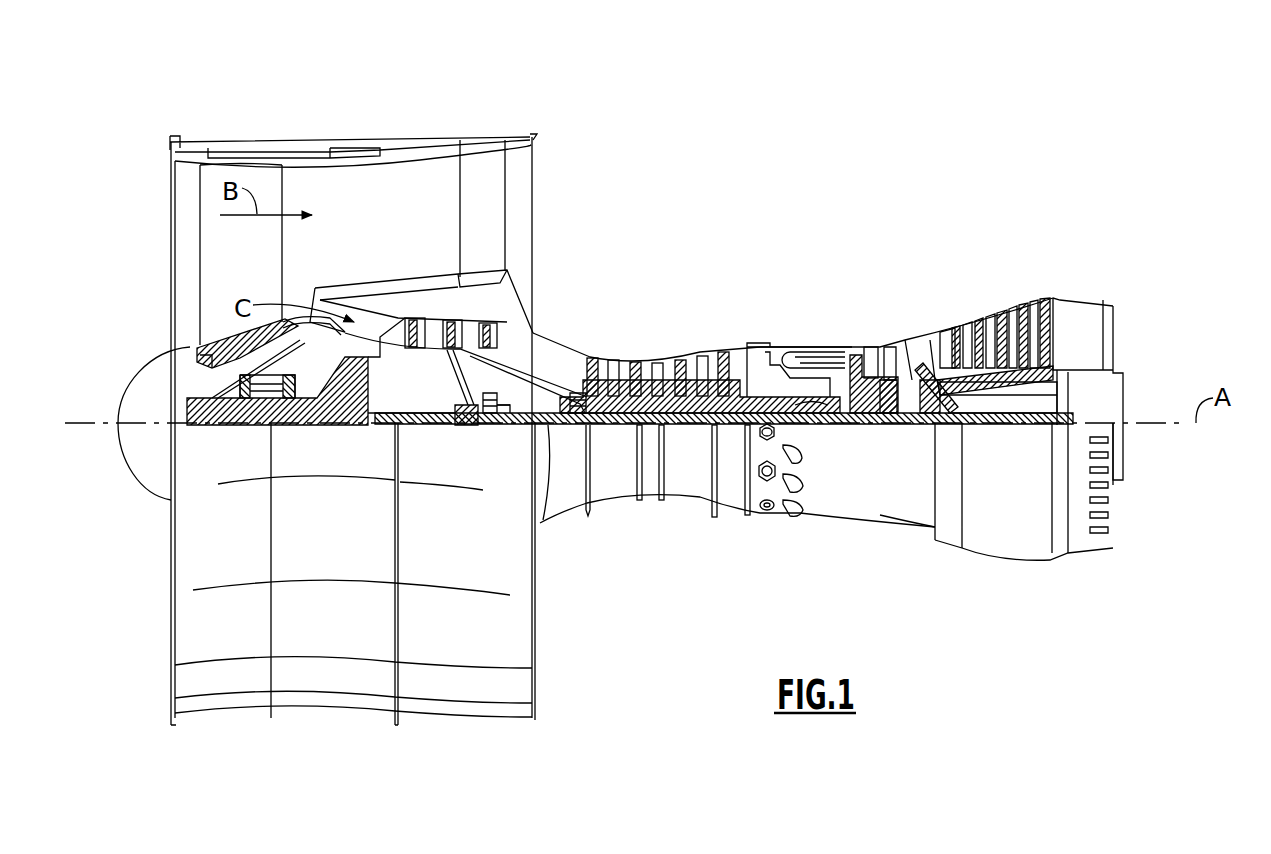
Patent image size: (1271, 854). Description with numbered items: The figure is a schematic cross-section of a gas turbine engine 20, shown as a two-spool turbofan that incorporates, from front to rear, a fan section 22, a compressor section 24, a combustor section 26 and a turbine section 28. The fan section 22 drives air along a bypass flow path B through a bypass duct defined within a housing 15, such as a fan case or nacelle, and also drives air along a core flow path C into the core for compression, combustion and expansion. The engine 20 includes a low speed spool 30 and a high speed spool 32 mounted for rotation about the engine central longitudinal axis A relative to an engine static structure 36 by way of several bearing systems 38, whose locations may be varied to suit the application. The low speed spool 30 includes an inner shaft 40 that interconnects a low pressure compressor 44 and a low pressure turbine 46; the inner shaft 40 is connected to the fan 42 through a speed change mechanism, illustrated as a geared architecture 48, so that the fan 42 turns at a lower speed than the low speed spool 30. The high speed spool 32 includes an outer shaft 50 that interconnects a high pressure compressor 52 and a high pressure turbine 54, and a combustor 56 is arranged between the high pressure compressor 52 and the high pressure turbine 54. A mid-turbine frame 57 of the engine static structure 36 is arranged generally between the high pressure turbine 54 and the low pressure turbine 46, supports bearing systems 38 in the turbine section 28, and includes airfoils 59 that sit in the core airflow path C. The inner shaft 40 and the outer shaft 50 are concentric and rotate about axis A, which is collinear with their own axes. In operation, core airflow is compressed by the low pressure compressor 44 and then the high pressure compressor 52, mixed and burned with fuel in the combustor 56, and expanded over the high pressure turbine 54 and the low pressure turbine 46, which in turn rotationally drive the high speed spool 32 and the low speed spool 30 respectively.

The gas turbine engine 20 is at (815, 189).
The housing 15 is at (352, 148).
The fan section 22 is at (281, 128).
The fan 42 is at (256, 269).
The geared architecture 48 is at (358, 408).
The low pressure compressor 44 is at (457, 330).
The compressor section 24 is at (583, 330).
The high pressure compressor 52 is at (672, 352).
The high speed spool 32 is at (733, 382).
The combustor section 26 is at (806, 312).
The combustor 56 is at (805, 366).
The high pressure turbine 54 is at (871, 355).
The mid-turbine frame 57 is at (918, 330).
The turbine section 28 is at (957, 281).
The low pressure turbine 46 is at (1000, 315).
The airfoils 59 is at (952, 388).
The bearing systems 38 is at (490, 422).
The outer shaft 50 is at (813, 406).
The inner shaft 40 is at (551, 428).
The low speed spool 30 is at (692, 436).
The engine static structure 36 is at (731, 518).